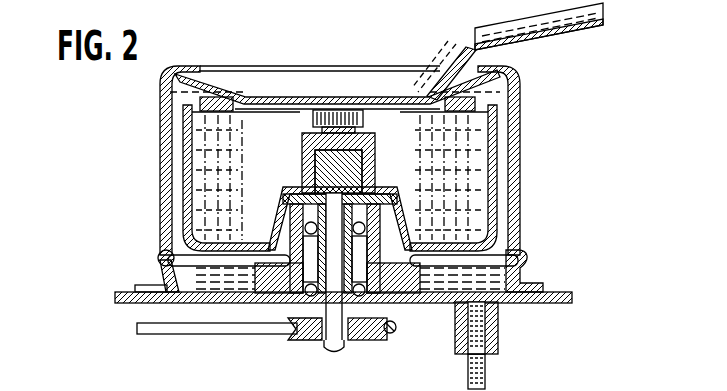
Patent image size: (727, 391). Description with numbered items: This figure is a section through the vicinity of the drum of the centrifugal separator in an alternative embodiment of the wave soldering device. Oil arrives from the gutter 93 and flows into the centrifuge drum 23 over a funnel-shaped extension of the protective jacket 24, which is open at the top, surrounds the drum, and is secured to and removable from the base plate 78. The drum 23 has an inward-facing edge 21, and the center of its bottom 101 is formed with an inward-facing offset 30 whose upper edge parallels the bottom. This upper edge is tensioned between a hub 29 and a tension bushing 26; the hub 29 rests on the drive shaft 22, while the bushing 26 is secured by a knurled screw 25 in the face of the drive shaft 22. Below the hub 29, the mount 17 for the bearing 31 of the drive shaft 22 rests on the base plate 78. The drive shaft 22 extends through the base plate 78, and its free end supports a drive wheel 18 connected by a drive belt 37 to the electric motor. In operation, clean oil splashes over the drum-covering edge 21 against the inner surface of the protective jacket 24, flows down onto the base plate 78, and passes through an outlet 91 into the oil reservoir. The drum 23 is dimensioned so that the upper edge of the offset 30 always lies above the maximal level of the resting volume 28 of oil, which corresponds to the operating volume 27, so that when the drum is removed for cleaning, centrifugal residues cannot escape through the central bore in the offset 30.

The mount 17 is at (160, 288).
The drive wheel 18 is at (370, 342).
The inward-facing edge 21 is at (214, 90).
The drive shaft 22 is at (338, 348).
The centrifuge drum 23 is at (492, 138).
The protective jacket 24 is at (168, 106).
The knurled screw 25 is at (352, 108).
The tension bushing 26 is at (300, 133).
The operating volume 27 is at (228, 156).
The resting volume 28 is at (234, 180).
The hub 29 is at (440, 224).
The inward-facing offset 30 is at (383, 190).
The bearing 31 is at (380, 305).
The drive belt 37 is at (152, 328).
The base plate 78 is at (568, 300).
The outlet 91 is at (498, 328).
The gutter 93 is at (492, 30).
The bottom 101 is at (505, 262).